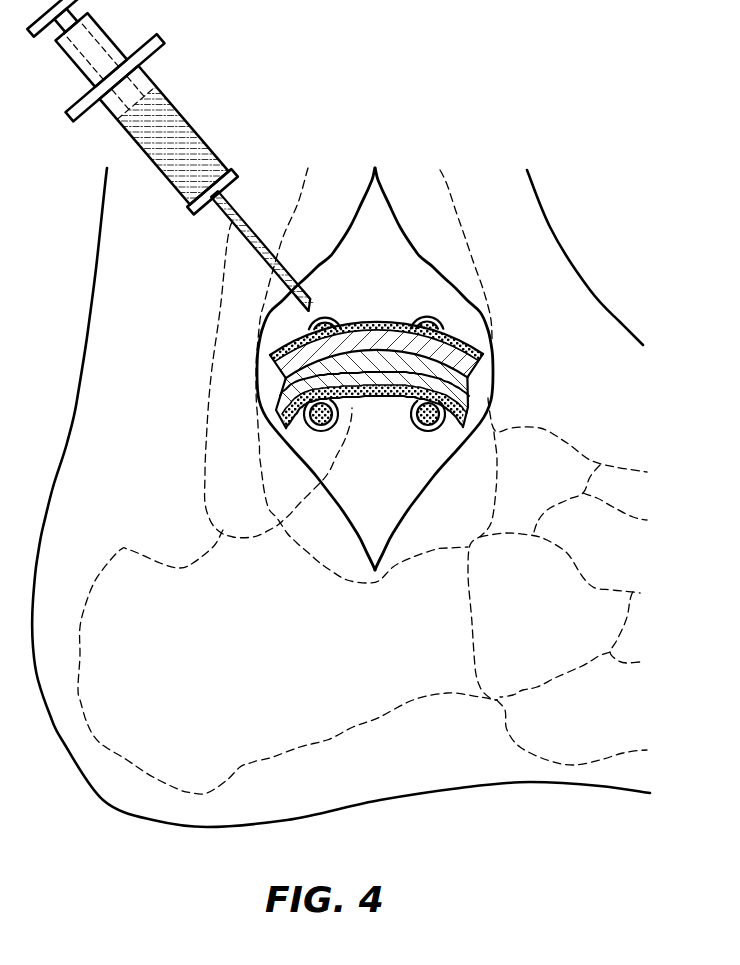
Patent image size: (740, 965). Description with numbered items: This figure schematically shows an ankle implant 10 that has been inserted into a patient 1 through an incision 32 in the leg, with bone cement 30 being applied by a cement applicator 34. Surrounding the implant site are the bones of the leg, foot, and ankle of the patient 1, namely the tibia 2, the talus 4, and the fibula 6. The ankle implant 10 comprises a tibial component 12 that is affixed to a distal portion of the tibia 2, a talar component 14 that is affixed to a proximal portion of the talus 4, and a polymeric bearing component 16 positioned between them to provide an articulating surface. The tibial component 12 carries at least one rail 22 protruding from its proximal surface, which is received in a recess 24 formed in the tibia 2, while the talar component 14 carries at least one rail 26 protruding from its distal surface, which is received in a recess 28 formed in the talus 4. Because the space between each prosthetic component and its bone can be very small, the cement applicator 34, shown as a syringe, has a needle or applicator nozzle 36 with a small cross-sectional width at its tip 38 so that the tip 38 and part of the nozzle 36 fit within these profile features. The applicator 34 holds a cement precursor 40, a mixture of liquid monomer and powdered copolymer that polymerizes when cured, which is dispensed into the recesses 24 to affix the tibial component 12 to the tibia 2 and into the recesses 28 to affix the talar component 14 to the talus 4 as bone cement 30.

The patient 1 is at (570, 265).
The tibia 2 is at (463, 253).
The talus 4 is at (490, 416).
The fibula 6 is at (227, 341).
The ankle implant 10 is at (276, 320).
The tibial component 12 is at (397, 367).
The talar component 14 is at (290, 407).
The bearing component 16 is at (303, 378).
The rail 22 is at (334, 308).
The recess 24 is at (342, 314).
The rail 26 is at (336, 425).
The recess 28 is at (413, 417).
The bone cement 30 is at (444, 316).
The incision 32 is at (401, 221).
The cement applicator 34 is at (78, 67).
The applicator nozzle 36 is at (241, 216).
The tip 38 is at (326, 306).
The cement precursor 40 is at (183, 137).